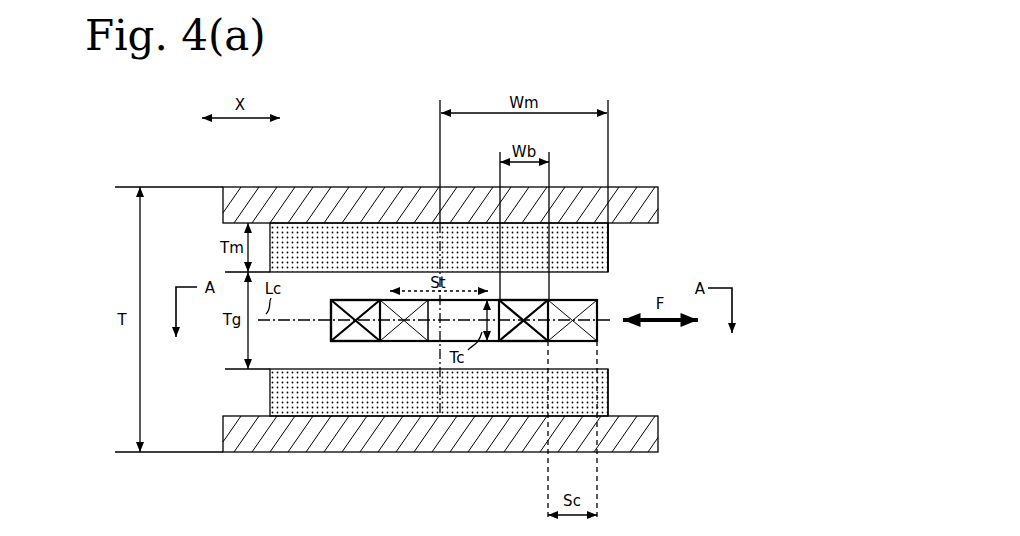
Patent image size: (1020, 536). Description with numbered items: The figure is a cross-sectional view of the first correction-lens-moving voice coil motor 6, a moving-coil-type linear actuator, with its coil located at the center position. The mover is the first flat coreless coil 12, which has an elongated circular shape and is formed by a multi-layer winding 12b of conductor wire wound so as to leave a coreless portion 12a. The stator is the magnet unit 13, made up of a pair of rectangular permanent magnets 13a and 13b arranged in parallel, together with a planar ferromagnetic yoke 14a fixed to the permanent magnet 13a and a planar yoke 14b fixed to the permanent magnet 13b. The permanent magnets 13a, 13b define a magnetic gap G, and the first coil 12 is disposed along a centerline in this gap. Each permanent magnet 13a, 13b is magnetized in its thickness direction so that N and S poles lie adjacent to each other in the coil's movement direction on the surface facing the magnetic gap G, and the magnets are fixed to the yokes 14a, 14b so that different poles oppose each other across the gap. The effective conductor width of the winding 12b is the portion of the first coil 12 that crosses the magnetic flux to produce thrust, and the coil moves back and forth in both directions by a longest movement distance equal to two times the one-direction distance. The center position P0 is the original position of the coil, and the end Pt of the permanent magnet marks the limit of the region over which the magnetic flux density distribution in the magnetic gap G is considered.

The first correction-lens-moving voice coil motor 6 is at (646, 162).
The first flat coreless coil 12 is at (441, 321).
The coreless portion 12a is at (436, 329).
The multi-layer winding 12b is at (338, 326).
The magnet unit 13 is at (745, 182).
The permanent magnet 13a is at (592, 243).
The permanent magnet 13b is at (592, 387).
The yoke 14a is at (647, 203).
The yoke 14b is at (645, 432).
The magnet end Pt is at (608, 262).
The center position (original position) P0 is at (440, 271).
The magnetic gap G is at (299, 312).